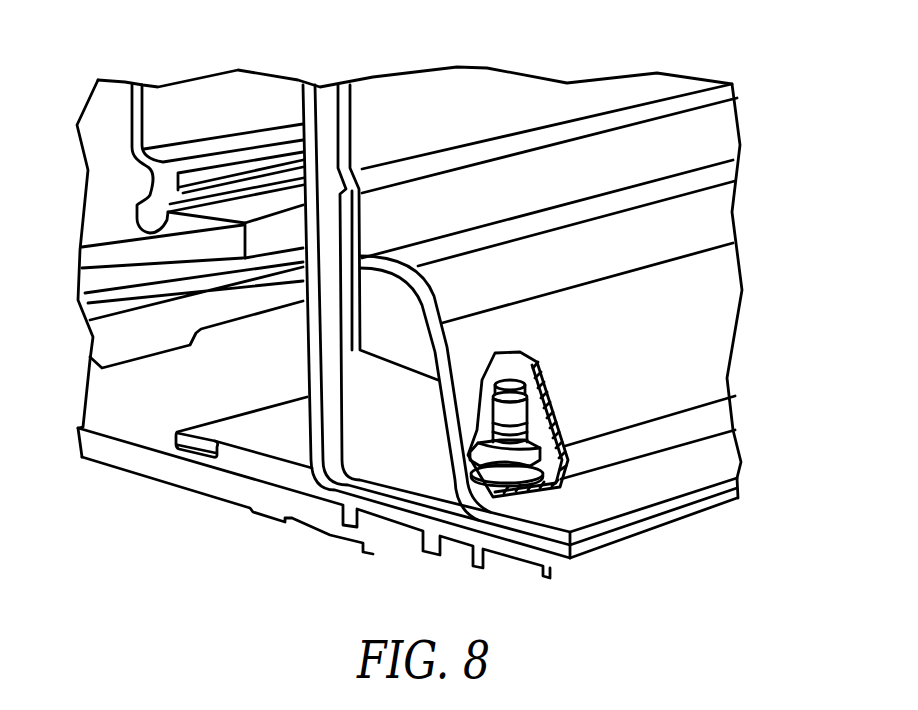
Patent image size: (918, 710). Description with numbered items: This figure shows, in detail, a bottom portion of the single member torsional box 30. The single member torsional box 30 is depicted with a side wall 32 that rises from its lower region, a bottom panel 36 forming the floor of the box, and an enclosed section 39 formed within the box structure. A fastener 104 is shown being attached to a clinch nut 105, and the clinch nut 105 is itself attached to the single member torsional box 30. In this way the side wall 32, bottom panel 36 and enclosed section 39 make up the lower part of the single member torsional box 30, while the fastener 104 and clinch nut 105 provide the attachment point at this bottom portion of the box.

The single member torsional box 30 is at (453, 105).
The side wall 32 is at (318, 332).
The bottom panel 36 is at (178, 475).
The enclosed section 39 is at (400, 330).
The fastener 104 is at (513, 411).
The clinch nut 105 is at (555, 462).